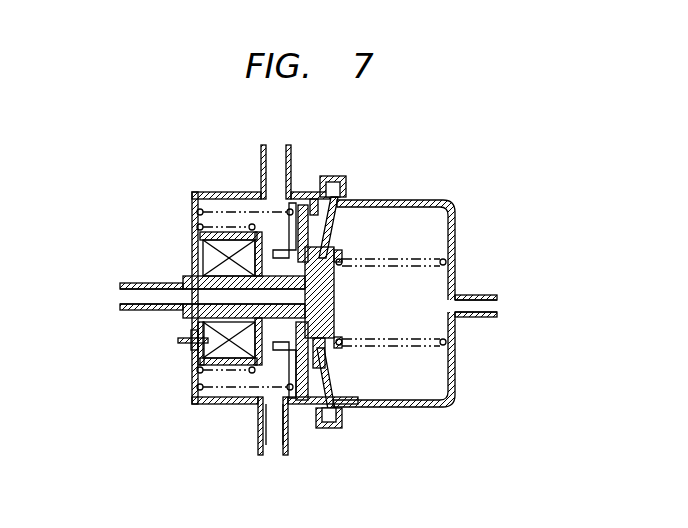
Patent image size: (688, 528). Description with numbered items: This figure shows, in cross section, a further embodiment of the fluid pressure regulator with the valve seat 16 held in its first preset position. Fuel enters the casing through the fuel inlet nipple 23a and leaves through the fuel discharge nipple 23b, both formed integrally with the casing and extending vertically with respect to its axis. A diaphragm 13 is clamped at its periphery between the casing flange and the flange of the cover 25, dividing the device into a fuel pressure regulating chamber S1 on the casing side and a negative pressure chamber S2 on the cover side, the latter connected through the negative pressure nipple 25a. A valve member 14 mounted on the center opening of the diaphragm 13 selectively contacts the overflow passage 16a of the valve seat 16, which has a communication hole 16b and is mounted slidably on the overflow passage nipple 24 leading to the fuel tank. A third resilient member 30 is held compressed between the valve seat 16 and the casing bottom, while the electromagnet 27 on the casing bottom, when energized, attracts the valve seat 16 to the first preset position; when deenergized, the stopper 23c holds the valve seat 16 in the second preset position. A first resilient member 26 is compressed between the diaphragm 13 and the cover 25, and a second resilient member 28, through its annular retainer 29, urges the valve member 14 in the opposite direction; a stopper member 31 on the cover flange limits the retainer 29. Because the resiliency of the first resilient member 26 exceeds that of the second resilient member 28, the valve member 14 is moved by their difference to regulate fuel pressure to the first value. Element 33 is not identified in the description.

The diaphragm 13 is at (335, 215).
The valve member 14 is at (335, 310).
The valve seat 16 is at (283, 258).
The overflow passage 16a is at (335, 292).
The communication hole 16b is at (300, 185).
The fuel inlet nipple 23a is at (283, 160).
The fuel discharge nipple 23b is at (287, 442).
The stopper 23c is at (280, 352).
The overflow passage nipple 24 is at (130, 312).
The cover 25 is at (457, 240).
The negative pressure nipple 25a is at (494, 294).
The first resilient member 26 is at (430, 258).
The electromagnet 27 is at (205, 255).
The second resilient member 28 is at (210, 208).
The retainer 29 is at (330, 182).
The third resilient member 30 is at (197, 221).
The stopper member 31 is at (304, 388).
The terminal 33 is at (194, 385).
The fuel pressure regulating chamber S1 is at (273, 363).
The negative pressure chamber S2 is at (440, 370).